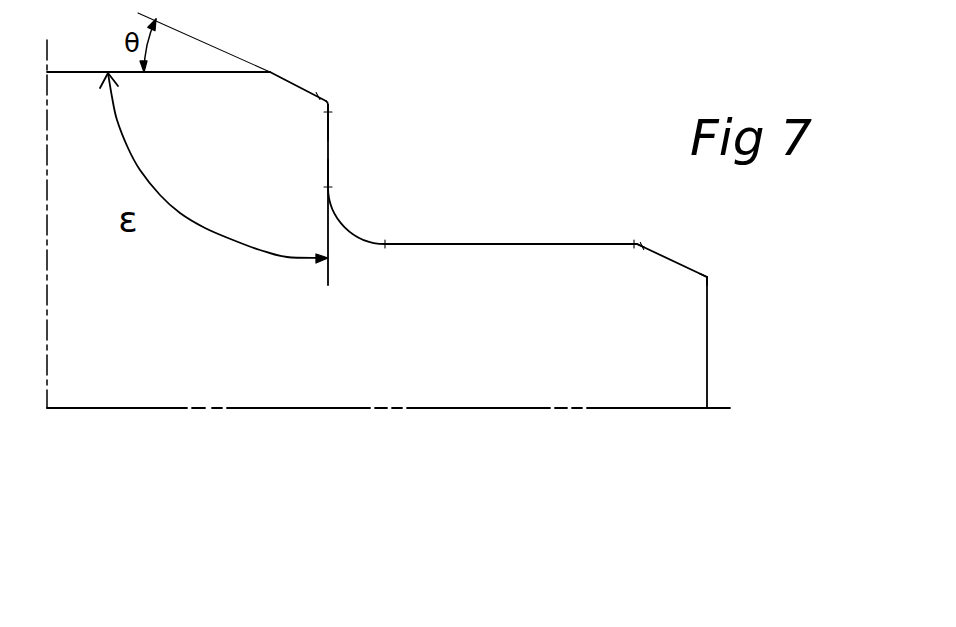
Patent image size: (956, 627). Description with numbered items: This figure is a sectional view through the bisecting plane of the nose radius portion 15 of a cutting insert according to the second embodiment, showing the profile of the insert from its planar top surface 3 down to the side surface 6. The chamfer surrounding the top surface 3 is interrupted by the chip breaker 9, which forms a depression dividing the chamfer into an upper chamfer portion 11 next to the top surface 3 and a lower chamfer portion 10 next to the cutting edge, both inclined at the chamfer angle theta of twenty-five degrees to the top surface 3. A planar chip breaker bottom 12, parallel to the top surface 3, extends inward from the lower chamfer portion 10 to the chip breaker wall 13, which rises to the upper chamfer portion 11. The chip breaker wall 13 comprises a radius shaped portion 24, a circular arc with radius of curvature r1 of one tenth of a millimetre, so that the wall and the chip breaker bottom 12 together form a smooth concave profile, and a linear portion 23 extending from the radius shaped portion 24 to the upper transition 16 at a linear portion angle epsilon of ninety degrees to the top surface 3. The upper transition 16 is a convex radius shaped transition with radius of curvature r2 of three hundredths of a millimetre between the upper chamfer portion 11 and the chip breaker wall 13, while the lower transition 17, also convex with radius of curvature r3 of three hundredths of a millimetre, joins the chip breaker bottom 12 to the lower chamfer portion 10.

The top surface 3 is at (73, 72).
The upper chamfer portion 11 is at (297, 84).
The upper transition 16 is at (328, 104).
The linear portion 23 is at (330, 127).
The chip breaker wall 13 is at (330, 150).
The radius shaped portion 24 is at (336, 208).
The chip breaker 9 is at (366, 240).
The chip breaker bottom 12 is at (513, 244).
The lower transition 17 is at (637, 242).
The lower chamfer portion 10 is at (672, 260).
The nose radius portion 15 is at (708, 276).
The side surface 6 is at (708, 352).
The radius of curvature of the radius shaped portion r1 is at (348, 224).
The radius of curvature of the upper transition r2 is at (324, 103).
The radius of curvature of the lower transition r3 is at (636, 247).